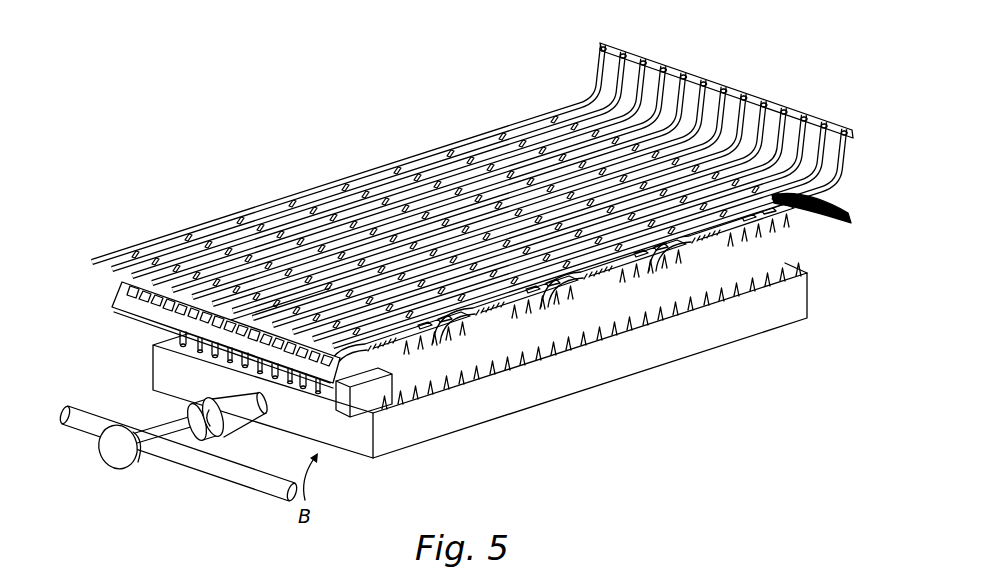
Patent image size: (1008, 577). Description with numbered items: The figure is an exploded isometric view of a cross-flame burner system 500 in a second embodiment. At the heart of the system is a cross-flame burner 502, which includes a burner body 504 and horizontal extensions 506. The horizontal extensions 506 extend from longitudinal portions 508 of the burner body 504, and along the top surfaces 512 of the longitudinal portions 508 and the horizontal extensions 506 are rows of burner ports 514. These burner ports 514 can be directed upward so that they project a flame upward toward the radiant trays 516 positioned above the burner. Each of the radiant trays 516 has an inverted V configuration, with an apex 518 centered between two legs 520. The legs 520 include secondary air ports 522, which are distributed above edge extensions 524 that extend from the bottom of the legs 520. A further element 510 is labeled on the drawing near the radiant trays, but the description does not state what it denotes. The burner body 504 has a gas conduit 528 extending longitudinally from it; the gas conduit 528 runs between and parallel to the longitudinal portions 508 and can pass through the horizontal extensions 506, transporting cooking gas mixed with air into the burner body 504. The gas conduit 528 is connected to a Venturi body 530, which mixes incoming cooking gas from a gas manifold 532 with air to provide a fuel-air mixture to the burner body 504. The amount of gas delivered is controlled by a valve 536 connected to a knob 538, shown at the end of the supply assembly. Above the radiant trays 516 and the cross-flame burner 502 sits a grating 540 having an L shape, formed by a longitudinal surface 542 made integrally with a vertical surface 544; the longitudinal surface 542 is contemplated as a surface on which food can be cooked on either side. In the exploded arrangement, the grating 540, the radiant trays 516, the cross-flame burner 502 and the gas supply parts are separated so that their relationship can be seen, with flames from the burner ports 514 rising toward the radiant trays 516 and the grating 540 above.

The cross-flame burner system 500 is at (476, 277).
The cross-flame burner 502 is at (524, 354).
The burner body 504 is at (480, 383).
The horizontal extensions 506 is at (430, 380).
The longitudinal portions 508 is at (553, 385).
The curved ramp 510 is at (809, 287).
The top surfaces 512 is at (717, 298).
The burner ports 514 is at (393, 407).
The radiant trays 516 is at (340, 380).
The apex 518 is at (817, 180).
The legs 520 is at (835, 198).
The secondary air ports 522 is at (420, 320).
The edge extensions 524 is at (645, 308).
The gas conduit 528 is at (345, 352).
The Venturi body 530 is at (213, 400).
The gas manifold 532 is at (205, 473).
The valve 536 is at (160, 432).
The knob 538 is at (117, 458).
The grating 540 is at (107, 252).
The longitudinal surface 542 is at (437, 173).
The vertical surface 544 is at (700, 100).